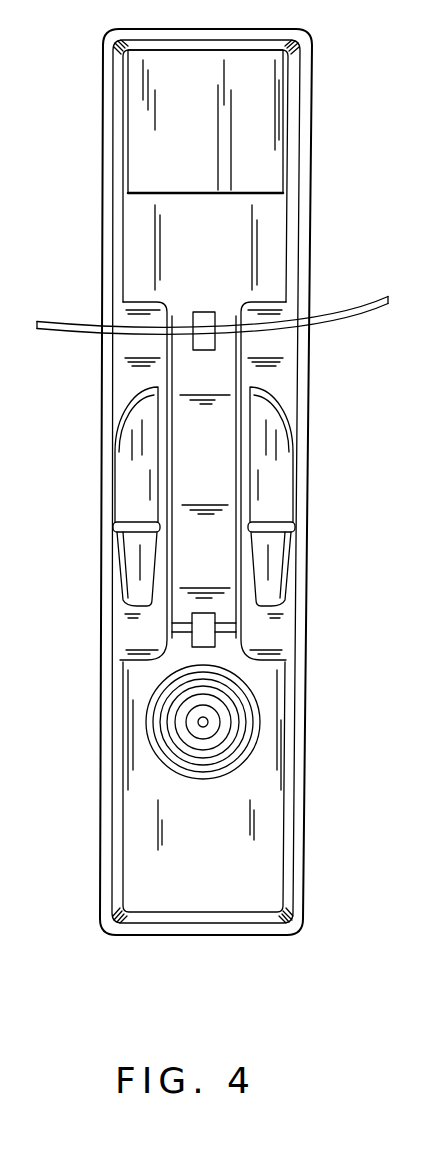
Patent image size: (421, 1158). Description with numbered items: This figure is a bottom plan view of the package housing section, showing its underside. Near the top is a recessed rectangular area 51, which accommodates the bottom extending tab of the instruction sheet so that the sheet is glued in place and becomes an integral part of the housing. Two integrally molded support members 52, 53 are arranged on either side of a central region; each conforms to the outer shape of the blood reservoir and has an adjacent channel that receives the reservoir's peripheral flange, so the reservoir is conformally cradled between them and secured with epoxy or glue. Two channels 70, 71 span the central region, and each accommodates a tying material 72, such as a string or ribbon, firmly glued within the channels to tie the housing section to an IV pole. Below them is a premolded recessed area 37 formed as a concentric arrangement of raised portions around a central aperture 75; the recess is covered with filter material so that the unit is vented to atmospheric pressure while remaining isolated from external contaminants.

The recessed rectangular area 51 is at (217, 60).
The tying material 72 is at (312, 322).
The channel 70 is at (218, 330).
The channel 71 is at (237, 628).
The support member 53 is at (120, 385).
The support member 52 is at (277, 367).
The recessed area 37 is at (225, 755).
The central aperture 75 is at (208, 720).